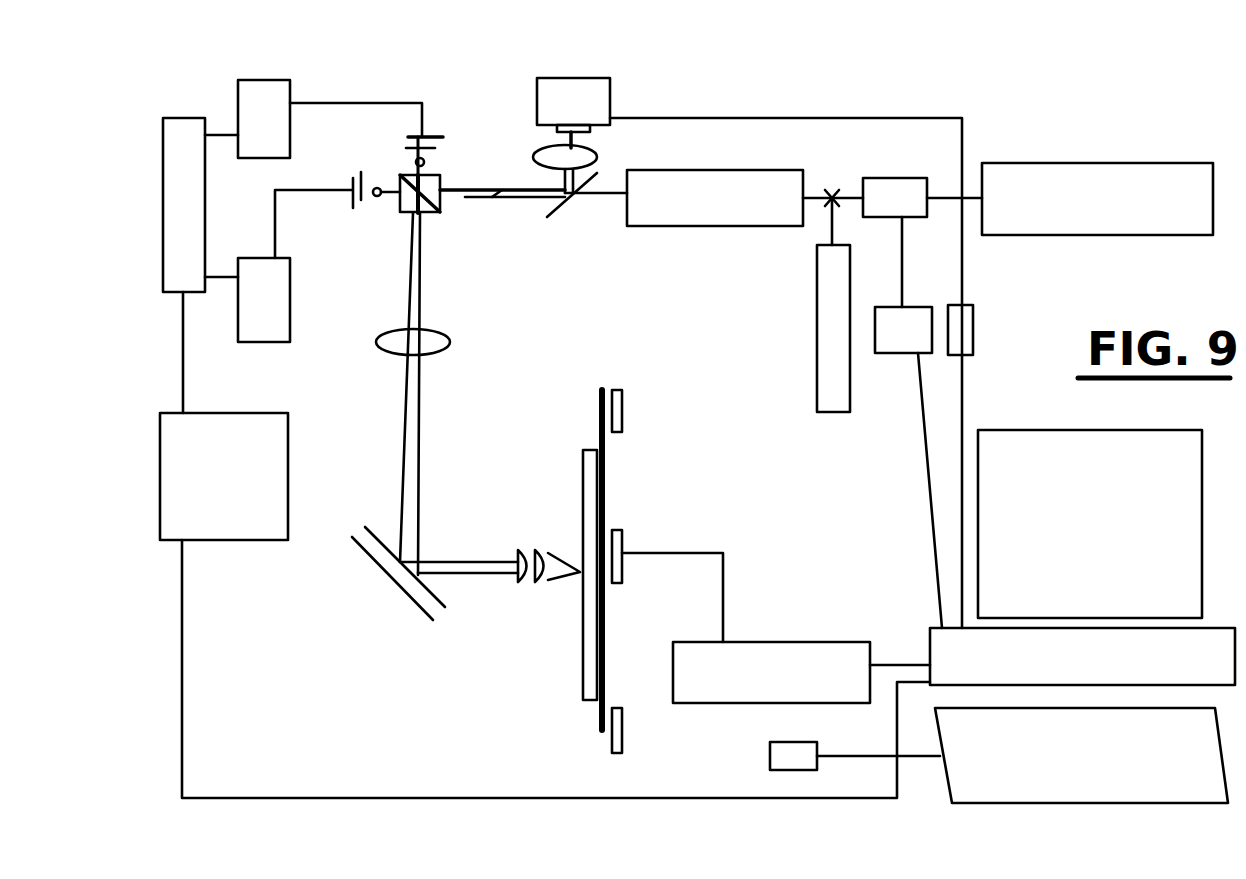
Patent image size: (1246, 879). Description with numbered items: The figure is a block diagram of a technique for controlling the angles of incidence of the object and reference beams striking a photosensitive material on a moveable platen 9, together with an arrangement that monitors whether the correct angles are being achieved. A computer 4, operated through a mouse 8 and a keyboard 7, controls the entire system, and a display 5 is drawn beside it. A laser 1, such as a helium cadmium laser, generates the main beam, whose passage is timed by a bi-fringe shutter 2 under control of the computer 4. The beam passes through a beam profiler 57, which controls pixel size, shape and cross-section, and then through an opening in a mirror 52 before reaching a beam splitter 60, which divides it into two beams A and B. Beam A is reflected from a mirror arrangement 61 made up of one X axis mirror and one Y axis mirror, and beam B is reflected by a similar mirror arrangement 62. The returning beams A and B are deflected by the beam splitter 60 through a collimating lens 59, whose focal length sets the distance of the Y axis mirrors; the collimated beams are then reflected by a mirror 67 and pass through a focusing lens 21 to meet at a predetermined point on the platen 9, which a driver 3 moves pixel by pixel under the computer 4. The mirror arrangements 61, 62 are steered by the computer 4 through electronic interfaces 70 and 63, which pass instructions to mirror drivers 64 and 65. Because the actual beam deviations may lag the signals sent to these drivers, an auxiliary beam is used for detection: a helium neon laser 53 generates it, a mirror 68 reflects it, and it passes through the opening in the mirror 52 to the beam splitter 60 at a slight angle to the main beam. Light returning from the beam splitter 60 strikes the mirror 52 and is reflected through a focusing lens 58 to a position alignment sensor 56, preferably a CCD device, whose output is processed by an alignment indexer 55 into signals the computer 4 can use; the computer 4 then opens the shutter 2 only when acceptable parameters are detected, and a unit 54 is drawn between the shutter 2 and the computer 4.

The laser 1 is at (1088, 215).
The bi-fringe shutter 2 is at (884, 214).
The driver 3 is at (760, 677).
The computer 4 is at (1071, 675).
The display 5 is at (1078, 505).
The keyboard 7 is at (1063, 775).
The mouse 8 is at (770, 757).
The platen 9 is at (605, 508).
The focusing lens 21 is at (521, 555).
The mirror 52 is at (552, 215).
The laser 53 is at (828, 288).
The amplifier 54 is at (905, 345).
The alignment indexer 55 is at (966, 330).
The position alignment sensor 56 is at (597, 98).
The beam profiler 57 is at (693, 212).
The focusing lens 58 is at (537, 155).
The collimating lens 59 is at (438, 345).
The beam splitter 60 is at (430, 215).
The mirror arrangement 61 is at (440, 142).
The mirror arrangement 62 is at (355, 178).
The electronic interface 63 is at (192, 207).
The mirror driver 64 is at (265, 147).
The mirror driver 65 is at (275, 323).
The mirror 67 is at (395, 577).
The mirror 68 is at (832, 196).
The electronic interface 70 is at (240, 492).
The beam A is at (424, 162).
The beam B is at (377, 197).